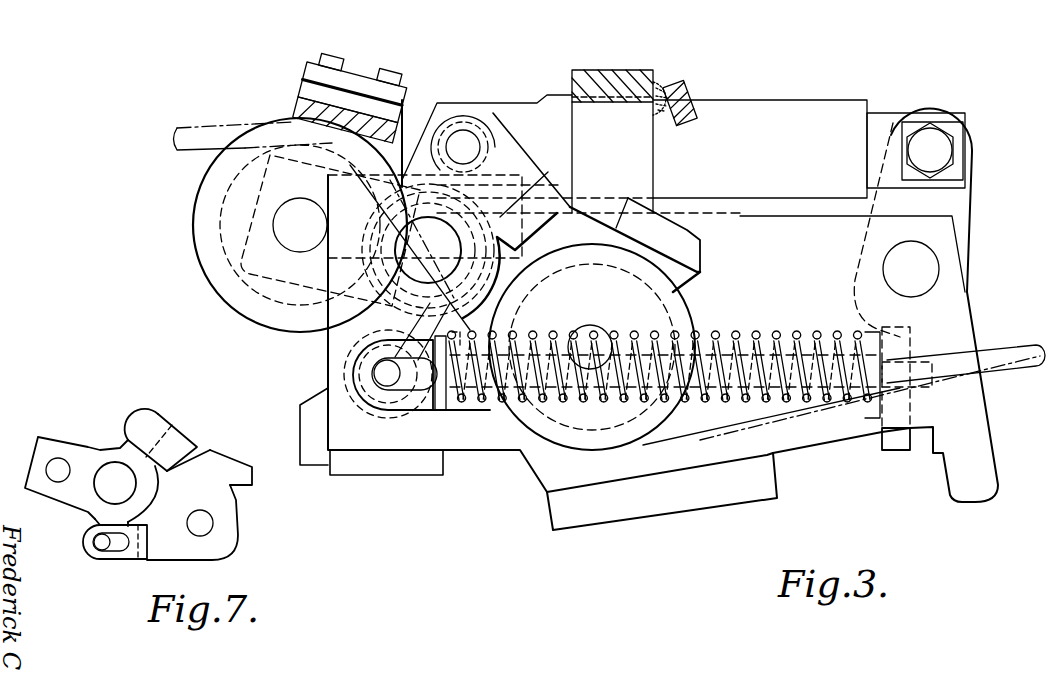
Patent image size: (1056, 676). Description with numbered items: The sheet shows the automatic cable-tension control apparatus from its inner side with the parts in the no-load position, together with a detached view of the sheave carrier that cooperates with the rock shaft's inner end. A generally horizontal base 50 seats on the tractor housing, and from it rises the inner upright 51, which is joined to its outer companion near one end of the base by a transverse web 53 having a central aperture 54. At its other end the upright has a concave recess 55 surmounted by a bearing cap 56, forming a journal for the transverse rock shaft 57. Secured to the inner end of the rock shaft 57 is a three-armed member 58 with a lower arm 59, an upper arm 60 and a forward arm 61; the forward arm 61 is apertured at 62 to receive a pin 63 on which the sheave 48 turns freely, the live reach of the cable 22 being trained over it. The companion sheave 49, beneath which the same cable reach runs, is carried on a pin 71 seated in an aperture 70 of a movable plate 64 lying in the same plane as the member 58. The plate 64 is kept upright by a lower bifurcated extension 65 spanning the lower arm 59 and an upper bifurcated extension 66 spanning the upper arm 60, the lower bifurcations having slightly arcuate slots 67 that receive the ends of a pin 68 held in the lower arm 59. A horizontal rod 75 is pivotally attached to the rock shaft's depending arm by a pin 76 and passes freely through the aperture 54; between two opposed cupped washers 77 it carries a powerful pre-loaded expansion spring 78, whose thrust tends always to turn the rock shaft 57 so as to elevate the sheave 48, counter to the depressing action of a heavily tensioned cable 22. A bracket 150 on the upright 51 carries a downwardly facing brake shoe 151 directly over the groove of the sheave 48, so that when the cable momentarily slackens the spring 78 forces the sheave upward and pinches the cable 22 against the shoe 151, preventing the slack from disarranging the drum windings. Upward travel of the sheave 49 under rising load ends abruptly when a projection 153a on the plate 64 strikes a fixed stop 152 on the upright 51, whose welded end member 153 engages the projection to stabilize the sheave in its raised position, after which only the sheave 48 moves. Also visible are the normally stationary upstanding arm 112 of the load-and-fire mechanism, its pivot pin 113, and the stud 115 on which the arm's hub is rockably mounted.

In FIG. 3, the cable 22 is at (196, 130).
In FIG. 3, the sheave 48 is at (197, 250).
In FIG. 3, the companion sheave 49 is at (690, 312).
In FIG. 3, the base 50 is at (546, 478).
In FIG. 3, the inner upright 51 is at (790, 286).
In FIG. 3, the transverse web 53 is at (912, 420).
In FIG. 3, the aperture 54 is at (912, 350).
In FIG. 3, the concave recess 55 is at (461, 217).
In FIG. 3, the bearing cap 56 is at (329, 212).
In FIG. 3, the rock shaft 57 is at (459, 251).
In FIG. 7, the three-armed member 58 is at (110, 452).
In FIG. 7, the lower arm 59 is at (95, 519).
In FIG. 7, the upper arm 60 is at (143, 413).
In FIG. 3, the forward arm 61 is at (262, 312).
In FIG. 7, the forward arm 61 is at (38, 463).
In FIG. 7, the aperture 62 is at (58, 456).
In FIG. 3, the pin 63 is at (291, 210).
In FIG. 3, the movable plate 64 is at (585, 222).
In FIG. 7, the movable plate 64 is at (228, 488).
In FIG. 3, the lower bifurcated extension 65 is at (446, 404).
In FIG. 7, the lower bifurcated extension 65 is at (130, 558).
In FIG. 3, the upper bifurcated extension 66 is at (512, 140).
In FIG. 7, the upper bifurcated extension 66 is at (170, 430).
In FIG. 3, the slot 67 is at (404, 387).
In FIG. 7, the slot 67 is at (112, 552).
In FIG. 3, the pin 68 is at (380, 382).
In FIG. 7, the pin 68 is at (97, 545).
In FIG. 7, the aperture 70 is at (200, 516).
In FIG. 3, the pin 71 is at (596, 335).
In FIG. 3, the rod 75 is at (926, 372).
In FIG. 3, the pin 76 is at (352, 371).
In FIG. 3, the cupped washer 77 is at (458, 418).
In FIG. 3, the expansion spring 78 is at (760, 338).
In FIG. 3, the upstanding arm 112 is at (960, 226).
In FIG. 3, the pin 113 is at (935, 136).
In FIG. 3, the stud 115 is at (897, 266).
In FIG. 3, the bracket 150 is at (346, 76).
In FIG. 3, the brake shoe 151 is at (300, 107).
In FIG. 3, the fixed stop 152 is at (610, 68).
In FIG. 3, the end member 153 is at (691, 90).
In FIG. 3, the projection 153a is at (698, 236).
In FIG. 7, the projection 153a is at (228, 454).